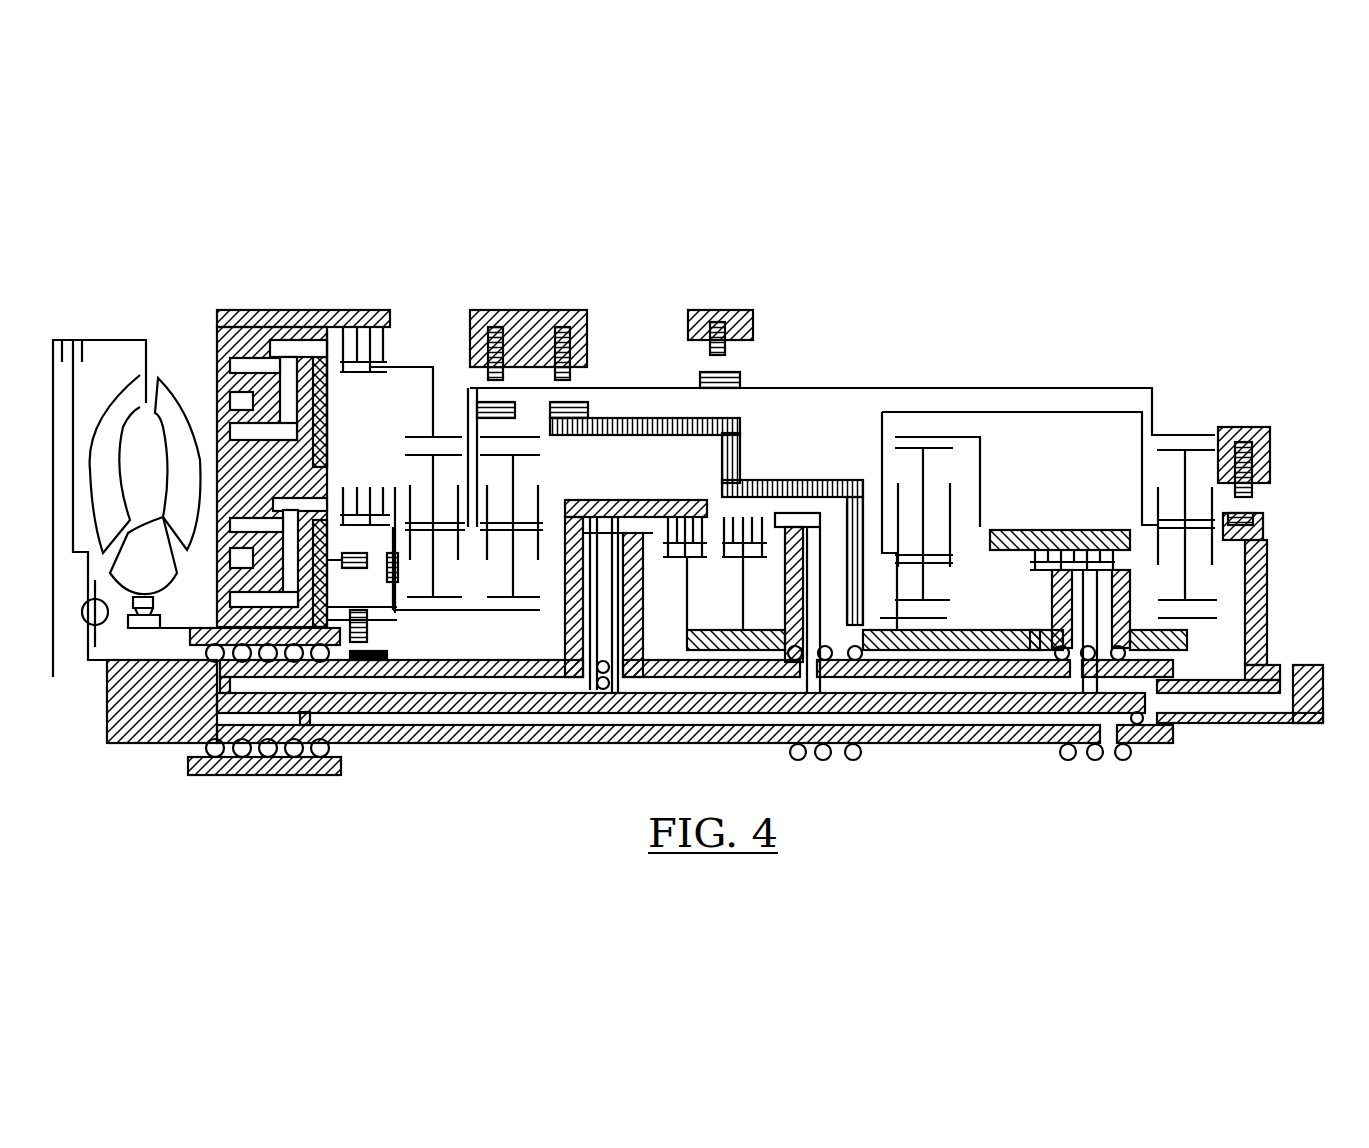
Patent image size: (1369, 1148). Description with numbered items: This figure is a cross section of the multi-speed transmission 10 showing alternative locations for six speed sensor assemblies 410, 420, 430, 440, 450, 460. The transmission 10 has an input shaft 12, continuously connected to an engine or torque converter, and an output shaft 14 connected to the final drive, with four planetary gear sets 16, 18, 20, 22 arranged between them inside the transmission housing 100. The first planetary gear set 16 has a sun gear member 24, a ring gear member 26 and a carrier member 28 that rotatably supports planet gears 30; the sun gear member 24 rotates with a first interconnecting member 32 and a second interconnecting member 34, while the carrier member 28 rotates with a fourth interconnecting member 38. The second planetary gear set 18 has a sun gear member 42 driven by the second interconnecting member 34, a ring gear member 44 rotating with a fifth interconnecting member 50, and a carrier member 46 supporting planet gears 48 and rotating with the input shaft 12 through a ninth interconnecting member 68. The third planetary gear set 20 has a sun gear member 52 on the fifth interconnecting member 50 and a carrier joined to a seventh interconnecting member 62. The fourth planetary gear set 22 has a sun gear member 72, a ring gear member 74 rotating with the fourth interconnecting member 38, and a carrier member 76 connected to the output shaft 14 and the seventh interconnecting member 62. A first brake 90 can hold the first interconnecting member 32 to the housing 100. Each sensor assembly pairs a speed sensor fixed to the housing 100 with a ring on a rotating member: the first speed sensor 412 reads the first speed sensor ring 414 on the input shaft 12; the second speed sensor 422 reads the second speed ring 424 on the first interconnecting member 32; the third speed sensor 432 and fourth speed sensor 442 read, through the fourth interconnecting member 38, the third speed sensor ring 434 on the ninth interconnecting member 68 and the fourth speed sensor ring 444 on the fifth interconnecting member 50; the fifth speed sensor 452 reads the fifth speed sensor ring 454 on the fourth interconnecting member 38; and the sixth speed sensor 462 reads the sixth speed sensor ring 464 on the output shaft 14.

The multi-speed transmission 10 is at (365, 212).
The input shaft 12 is at (540, 550).
The output shaft 14 is at (1280, 723).
The first planetary gear set 16 is at (442, 648).
The second planetary gear set 18 is at (495, 648).
The third planetary gear set 20 is at (897, 410).
The fourth planetary gear set 22 is at (1182, 433).
The sun gear member 24 is at (432, 625).
The ring gear member 26 is at (418, 430).
The carrier member 28 is at (462, 547).
The planet gears 30 is at (443, 453).
The first shaft or interconnecting member 32 is at (340, 490).
The second shaft or interconnecting member 34 is at (490, 625).
The fourth shaft or interconnecting member 38 is at (1015, 388).
The sun gear member 42 is at (505, 625).
The ring gear member 44 is at (540, 437).
The carrier member 46 is at (624, 510).
The planet gears 48 is at (580, 392).
The fifth shaft or interconnecting member 50 is at (740, 432).
The sun gear member 52 is at (947, 618).
The seventh shaft or interconnecting member 62 is at (1095, 412).
The ninth shaft or interconnecting member 68 is at (480, 468).
The sun gear member 72 is at (1185, 510).
The ring gear member 74 is at (1200, 433).
The carrier member 76 is at (1230, 550).
The first brake 90 is at (400, 497).
The transmission housing 100 is at (253, 310).
The first speed sensor assembly 410 is at (425, 625).
The first speed sensor 412 is at (347, 660).
The first speed sensor ring 414 is at (403, 650).
The second speed sensor assembly 420 is at (317, 563).
The second speed sensor 422 is at (340, 552).
The second speed ring 424 is at (385, 583).
The third speed sensor assembly 430 is at (468, 250).
The third speed sensor 432 is at (490, 310).
The third speed sensor ring 434 is at (490, 400).
The fourth speed sensor assembly 440 is at (598, 250).
The fourth speed sensor 442 is at (590, 345).
The fourth speed sensor ring 444 is at (523, 457).
The fifth speed sensor assembly 450 is at (766, 250).
The fifth speed sensor 452 is at (748, 336).
The fifth speed sensor ring 454 is at (742, 378).
The sixth speed sensor assembly 460 is at (1322, 412).
The sixth speed sensor 462 is at (1252, 497).
The sixth speed sensor ring 464 is at (1262, 520).